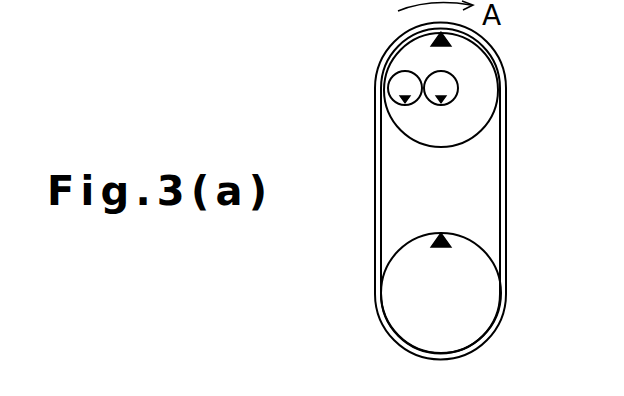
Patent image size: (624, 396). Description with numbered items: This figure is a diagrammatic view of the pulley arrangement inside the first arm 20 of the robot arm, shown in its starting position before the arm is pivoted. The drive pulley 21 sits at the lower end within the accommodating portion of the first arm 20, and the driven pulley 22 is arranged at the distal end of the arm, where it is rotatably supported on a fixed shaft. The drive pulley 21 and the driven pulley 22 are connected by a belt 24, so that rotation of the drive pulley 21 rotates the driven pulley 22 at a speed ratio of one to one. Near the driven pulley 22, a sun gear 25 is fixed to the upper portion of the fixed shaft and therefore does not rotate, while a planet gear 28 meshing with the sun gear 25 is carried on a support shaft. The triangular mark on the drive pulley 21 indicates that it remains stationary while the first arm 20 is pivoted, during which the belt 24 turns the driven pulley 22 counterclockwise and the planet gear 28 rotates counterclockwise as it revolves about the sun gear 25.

The first arm 20 is at (375, 162).
The drive pulley 21 is at (481, 250).
The driven pulley 22 is at (462, 140).
The belt 24 is at (381, 183).
The sun gear 25 is at (459, 71).
The planet gear 28 is at (388, 86).